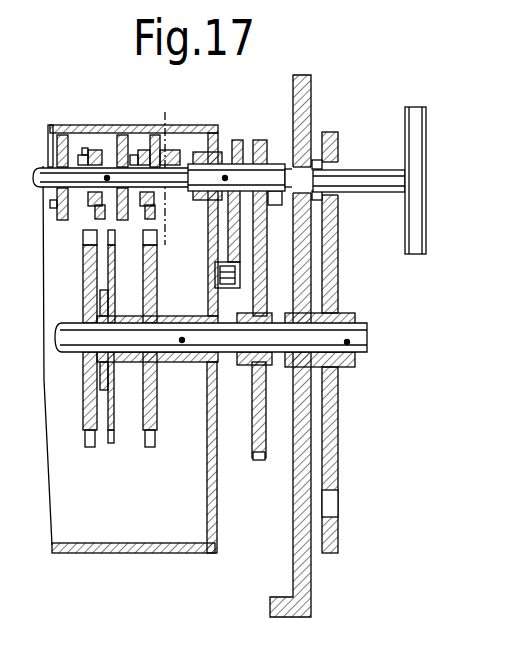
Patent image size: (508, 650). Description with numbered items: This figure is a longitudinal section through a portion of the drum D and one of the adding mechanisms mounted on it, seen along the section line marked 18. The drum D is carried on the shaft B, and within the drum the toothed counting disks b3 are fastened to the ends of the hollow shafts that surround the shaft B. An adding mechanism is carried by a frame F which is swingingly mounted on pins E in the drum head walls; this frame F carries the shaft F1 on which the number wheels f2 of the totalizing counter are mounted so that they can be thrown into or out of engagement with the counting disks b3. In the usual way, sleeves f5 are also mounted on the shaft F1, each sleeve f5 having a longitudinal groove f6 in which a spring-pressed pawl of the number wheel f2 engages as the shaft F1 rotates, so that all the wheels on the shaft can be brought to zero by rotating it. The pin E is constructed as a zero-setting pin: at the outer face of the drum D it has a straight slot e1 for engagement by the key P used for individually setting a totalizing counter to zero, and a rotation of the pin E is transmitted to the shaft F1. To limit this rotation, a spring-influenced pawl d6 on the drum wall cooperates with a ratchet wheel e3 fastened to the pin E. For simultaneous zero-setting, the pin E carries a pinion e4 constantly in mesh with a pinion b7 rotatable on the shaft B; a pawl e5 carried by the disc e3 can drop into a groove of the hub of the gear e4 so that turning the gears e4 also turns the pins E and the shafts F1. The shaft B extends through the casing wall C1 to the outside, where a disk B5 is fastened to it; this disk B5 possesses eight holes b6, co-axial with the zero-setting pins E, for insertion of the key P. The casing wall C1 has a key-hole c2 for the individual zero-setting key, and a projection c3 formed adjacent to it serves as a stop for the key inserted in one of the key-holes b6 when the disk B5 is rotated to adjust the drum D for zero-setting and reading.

The drum D is at (182, 547).
The number wheels f2 is at (150, 137).
The longitudinal groove f6 is at (178, 196).
The sleeves f5 is at (110, 127).
The section line 18 is at (170, 181).
The pawl e5 is at (244, 132).
The ratchet wheel e3 is at (237, 140).
The pinion e4 is at (259, 156).
The zero-setting pin E is at (218, 172).
The spring-influenced pawl d6 is at (215, 258).
The straight slot e1 is at (253, 214).
The shaft F1 is at (43, 168).
The frame F is at (199, 156).
The casing wall C1 is at (313, 92).
The key-hole c2 is at (300, 167).
The disk B5 is at (338, 424).
The holes b6 is at (338, 503).
The projection c3 is at (318, 200).
The key P is at (390, 176).
The toothed counting disk b3 is at (169, 403).
The pinion b7 is at (250, 430).
The shaft B is at (68, 347).